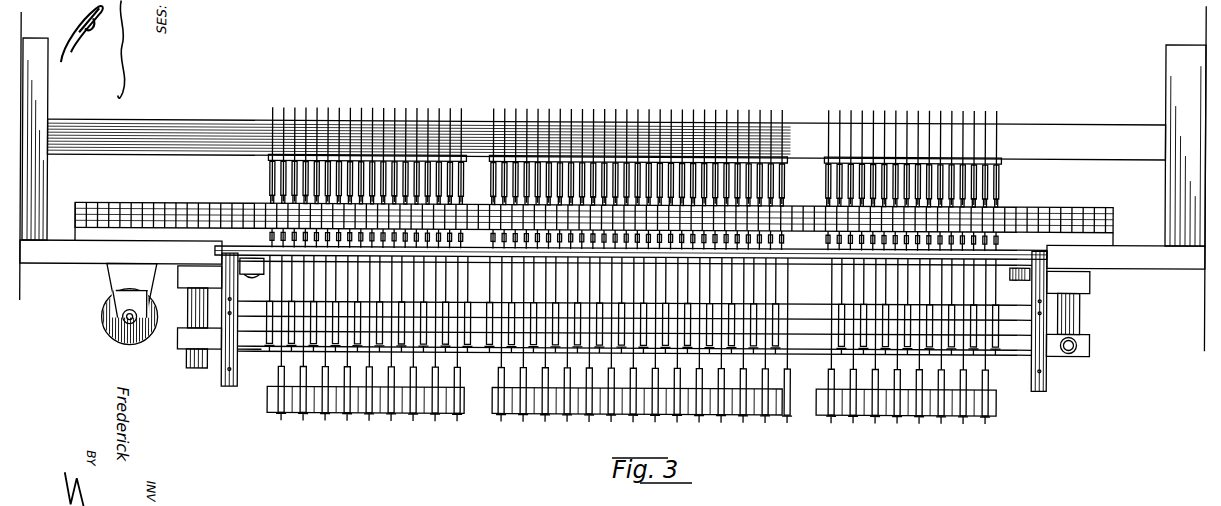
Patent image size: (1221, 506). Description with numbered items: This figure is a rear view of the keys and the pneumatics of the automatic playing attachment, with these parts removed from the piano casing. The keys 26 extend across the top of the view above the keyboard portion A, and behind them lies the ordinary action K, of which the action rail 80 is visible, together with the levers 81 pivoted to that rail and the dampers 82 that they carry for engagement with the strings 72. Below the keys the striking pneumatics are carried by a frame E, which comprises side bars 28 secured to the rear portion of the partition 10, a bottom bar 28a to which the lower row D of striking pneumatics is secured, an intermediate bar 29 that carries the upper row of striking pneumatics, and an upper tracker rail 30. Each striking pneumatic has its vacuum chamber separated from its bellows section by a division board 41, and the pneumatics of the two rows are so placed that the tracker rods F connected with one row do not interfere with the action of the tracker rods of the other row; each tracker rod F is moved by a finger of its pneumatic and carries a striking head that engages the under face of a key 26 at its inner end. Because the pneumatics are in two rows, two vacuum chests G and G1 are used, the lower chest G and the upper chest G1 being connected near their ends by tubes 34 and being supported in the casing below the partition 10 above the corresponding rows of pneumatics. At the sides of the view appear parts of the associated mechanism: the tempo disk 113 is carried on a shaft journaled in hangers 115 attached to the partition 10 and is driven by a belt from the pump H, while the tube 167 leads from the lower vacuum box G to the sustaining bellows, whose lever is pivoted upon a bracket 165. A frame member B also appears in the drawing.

The frame standard A is at (52, 116).
The action rail 80 is at (217, 119).
The strings 72 is at (393, 118).
The action K is at (628, 157).
The damper 82 is at (267, 159).
The lever 81 is at (267, 187).
The keys 26 is at (247, 202).
The division board 41 is at (270, 237).
The partition 10 is at (612, 252).
The hangers 115 is at (115, 288).
The disk 113 is at (117, 337).
The vacuum chest G1 is at (1100, 277).
The tubes 34 is at (192, 309).
The vacuum chest G is at (192, 339).
The tube 167 is at (190, 369).
The bracket 165 is at (1072, 345).
The side bars 28 is at (223, 371).
The bottom bar 28a is at (1021, 321).
The frame E is at (233, 309).
The frame member B is at (249, 347).
The upper tracker rail 30 is at (480, 254).
The intermediate bar 29 is at (635, 317).
The tracker rods F is at (457, 350).
The pump H is at (494, 398).
The lower series of striking pneumatics D is at (267, 402).